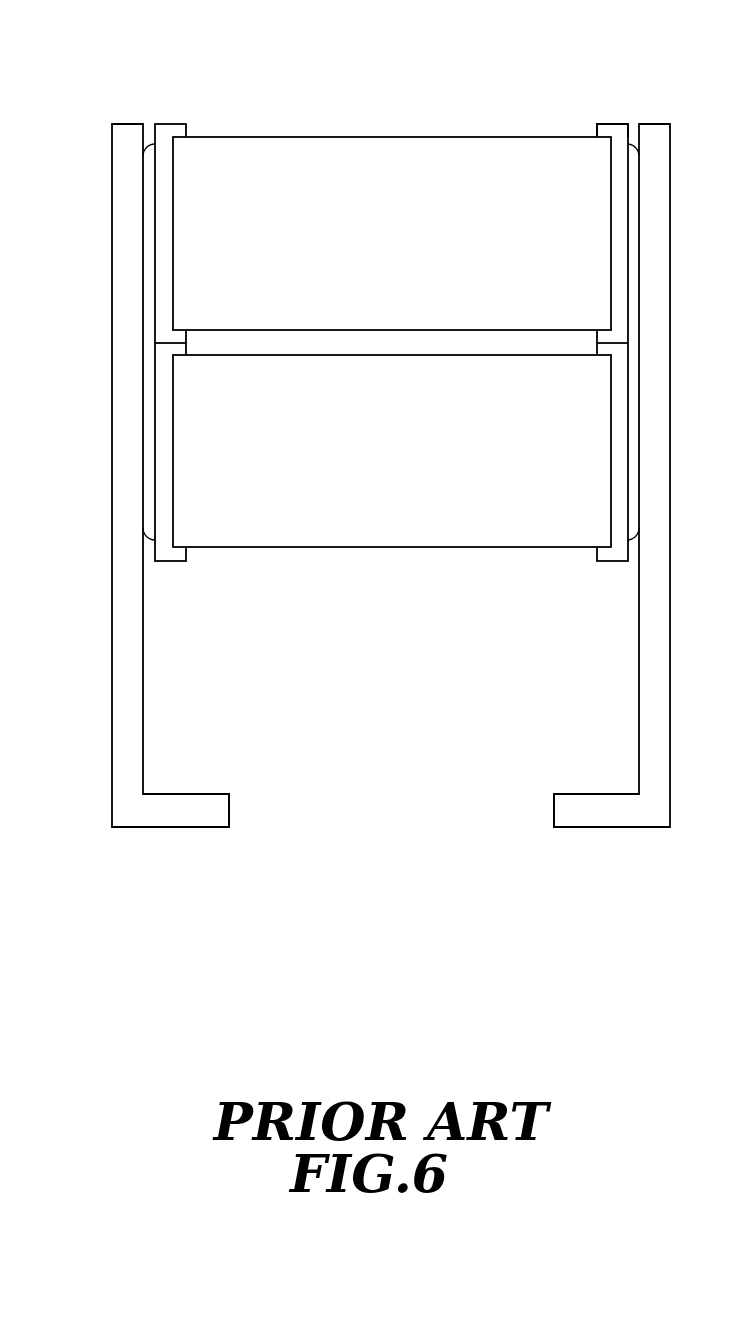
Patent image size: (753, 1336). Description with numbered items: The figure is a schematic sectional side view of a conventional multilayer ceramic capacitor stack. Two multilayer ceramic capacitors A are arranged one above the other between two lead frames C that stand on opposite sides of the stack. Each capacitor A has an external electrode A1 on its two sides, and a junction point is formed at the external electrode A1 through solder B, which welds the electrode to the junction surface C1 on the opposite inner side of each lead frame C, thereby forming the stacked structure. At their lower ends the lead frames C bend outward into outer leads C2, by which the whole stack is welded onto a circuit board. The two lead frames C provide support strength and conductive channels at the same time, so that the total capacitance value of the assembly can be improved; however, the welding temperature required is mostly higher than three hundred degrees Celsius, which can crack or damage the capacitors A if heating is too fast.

The multilayer ceramic capacitor A is at (430, 147).
The external electrode A1 is at (615, 135).
The solder B is at (147, 360).
The lead frame C is at (128, 667).
The junction surface C1 is at (145, 224).
The outer lead C2 is at (188, 810).